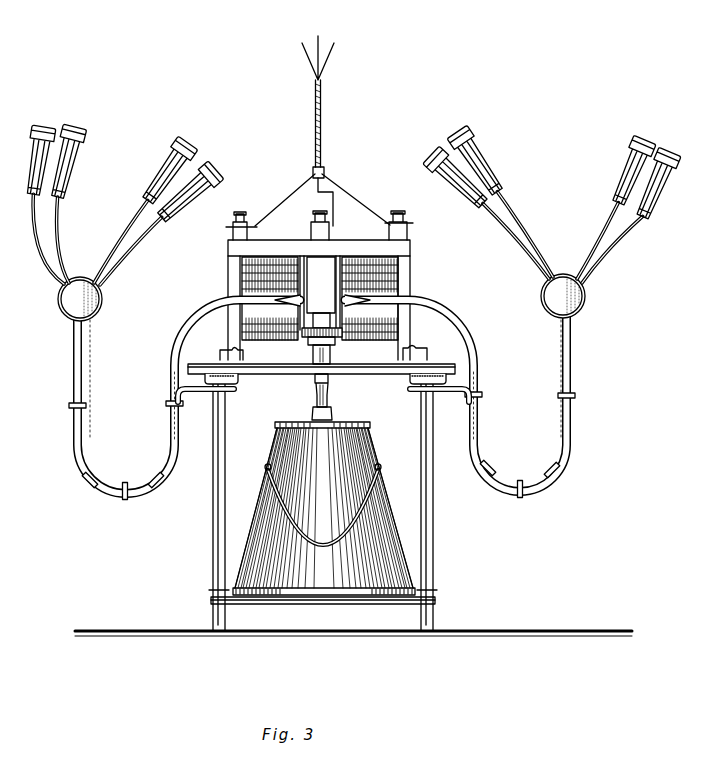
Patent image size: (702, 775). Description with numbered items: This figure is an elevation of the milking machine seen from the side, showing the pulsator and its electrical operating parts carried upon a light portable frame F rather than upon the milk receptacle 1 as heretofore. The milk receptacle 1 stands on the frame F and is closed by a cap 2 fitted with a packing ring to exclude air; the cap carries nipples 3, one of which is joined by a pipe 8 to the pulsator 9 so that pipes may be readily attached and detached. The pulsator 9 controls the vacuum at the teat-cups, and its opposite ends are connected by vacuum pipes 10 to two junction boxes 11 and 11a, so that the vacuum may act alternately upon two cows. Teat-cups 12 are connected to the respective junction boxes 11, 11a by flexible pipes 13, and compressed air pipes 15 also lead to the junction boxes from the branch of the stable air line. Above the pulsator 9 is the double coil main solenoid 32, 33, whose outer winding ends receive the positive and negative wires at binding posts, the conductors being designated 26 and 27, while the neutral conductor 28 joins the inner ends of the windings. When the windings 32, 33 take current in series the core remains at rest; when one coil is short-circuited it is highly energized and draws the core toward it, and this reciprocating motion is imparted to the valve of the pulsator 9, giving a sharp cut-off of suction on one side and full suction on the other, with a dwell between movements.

The milk receptacle 1 is at (368, 448).
The cap 2 is at (365, 424).
The nipples 3 is at (312, 422).
The pipe 8 is at (329, 388).
The pulsator 9 is at (317, 298).
The vacuum pipes 10 is at (167, 352).
The junction box 11 is at (62, 313).
The junction box 11a is at (582, 293).
The teat-cups 12 is at (192, 190).
The flexible pipes 13 is at (118, 232).
The compressed air pipes 15 is at (72, 366).
The brush 26 is at (285, 200).
The brush 27 is at (356, 199).
The brush 28 is at (312, 202).
The solenoid coil 32 is at (241, 272).
The solenoid coil 33 is at (400, 266).
The portable frame F is at (428, 529).